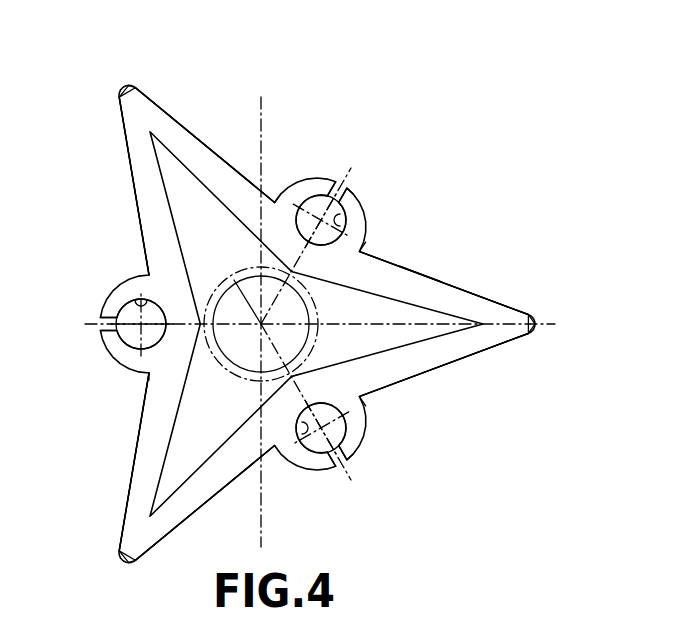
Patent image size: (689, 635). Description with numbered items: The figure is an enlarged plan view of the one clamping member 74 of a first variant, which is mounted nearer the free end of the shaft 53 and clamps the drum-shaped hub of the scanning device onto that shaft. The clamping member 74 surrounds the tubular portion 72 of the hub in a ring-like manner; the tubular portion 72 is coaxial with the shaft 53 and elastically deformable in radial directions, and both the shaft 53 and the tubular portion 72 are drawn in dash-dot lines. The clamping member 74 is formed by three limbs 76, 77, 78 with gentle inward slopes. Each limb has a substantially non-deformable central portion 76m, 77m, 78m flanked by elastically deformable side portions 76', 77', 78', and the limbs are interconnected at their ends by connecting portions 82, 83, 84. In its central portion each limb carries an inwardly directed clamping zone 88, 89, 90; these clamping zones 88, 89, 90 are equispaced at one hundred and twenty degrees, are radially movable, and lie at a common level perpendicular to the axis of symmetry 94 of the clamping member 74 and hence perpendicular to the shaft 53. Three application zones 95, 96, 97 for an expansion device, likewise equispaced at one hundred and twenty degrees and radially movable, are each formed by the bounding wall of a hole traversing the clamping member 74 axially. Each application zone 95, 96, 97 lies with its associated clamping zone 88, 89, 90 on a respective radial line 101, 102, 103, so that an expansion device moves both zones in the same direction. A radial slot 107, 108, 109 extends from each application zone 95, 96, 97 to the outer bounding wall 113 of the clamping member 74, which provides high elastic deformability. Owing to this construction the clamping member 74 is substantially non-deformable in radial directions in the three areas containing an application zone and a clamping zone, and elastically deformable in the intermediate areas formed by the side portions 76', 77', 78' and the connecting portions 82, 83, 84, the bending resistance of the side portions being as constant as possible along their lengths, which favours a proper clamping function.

The clamping member 74 is at (466, 208).
The tubular portion 72 is at (316, 324).
The axis of symmetry 94 is at (261, 324).
The clamping zone 90 is at (251, 303).
The shaft 53 is at (241, 275).
The application zone 95 is at (349, 219).
The application zone 96 is at (319, 454).
The application zone 97 is at (140, 291).
The limb 76 is at (196, 181).
The limb 77 is at (443, 329).
The limb 78 is at (191, 466).
The side portion 76' is at (204, 137).
The side portion 77' is at (450, 364).
The side portion 78' is at (119, 462).
The central portion 76m is at (290, 169).
The central portion 77m is at (398, 405).
The central portion 78m is at (190, 394).
The connecting portion 82 is at (551, 307).
The connecting portion 83 is at (142, 565).
The connecting portion 84 is at (136, 71).
The clamping zone 88 is at (384, 247).
The clamping zone 89 is at (327, 355).
The radial line 101 is at (350, 162).
The radial line 102 is at (367, 457).
The radial line 103 is at (101, 366).
The radial slot 107 is at (377, 180).
The radial slot 108 is at (365, 486).
The radial slot 109 is at (97, 286).
The outer bounding wall 113 is at (431, 256).